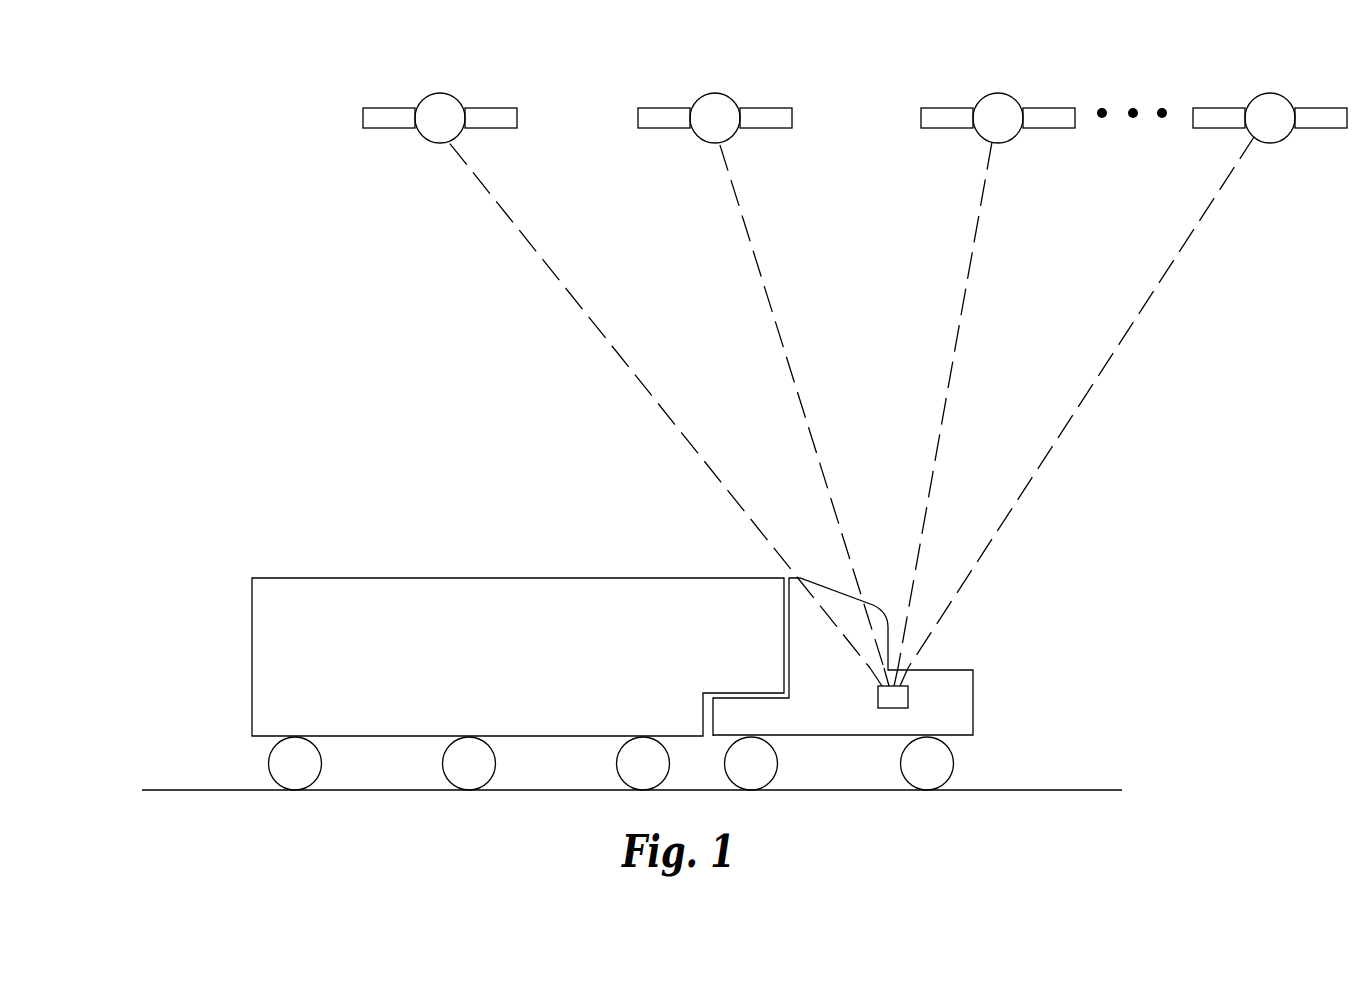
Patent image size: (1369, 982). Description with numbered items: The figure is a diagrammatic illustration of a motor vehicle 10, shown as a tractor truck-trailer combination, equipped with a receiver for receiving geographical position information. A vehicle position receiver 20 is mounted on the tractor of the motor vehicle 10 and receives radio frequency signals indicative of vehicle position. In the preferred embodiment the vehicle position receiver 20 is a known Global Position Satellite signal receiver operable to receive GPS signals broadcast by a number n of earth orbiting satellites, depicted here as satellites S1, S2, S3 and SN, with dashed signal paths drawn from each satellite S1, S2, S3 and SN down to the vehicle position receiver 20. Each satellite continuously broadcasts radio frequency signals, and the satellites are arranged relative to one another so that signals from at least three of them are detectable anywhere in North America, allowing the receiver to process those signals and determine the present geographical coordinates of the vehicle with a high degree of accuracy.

The motor vehicle 10 is at (358, 558).
The vehicle position receiver 20 is at (908, 695).
The earth orbiting satellite S1 is at (440, 102).
The earth orbiting satellite S2 is at (715, 102).
The earth orbiting satellite S3 is at (998, 102).
The earth orbiting satellite SN is at (1270, 102).